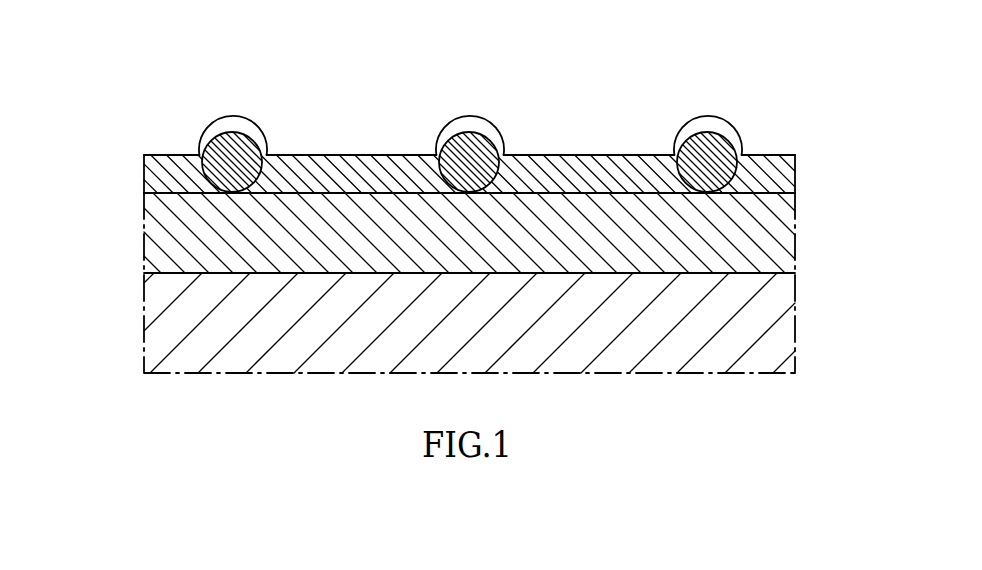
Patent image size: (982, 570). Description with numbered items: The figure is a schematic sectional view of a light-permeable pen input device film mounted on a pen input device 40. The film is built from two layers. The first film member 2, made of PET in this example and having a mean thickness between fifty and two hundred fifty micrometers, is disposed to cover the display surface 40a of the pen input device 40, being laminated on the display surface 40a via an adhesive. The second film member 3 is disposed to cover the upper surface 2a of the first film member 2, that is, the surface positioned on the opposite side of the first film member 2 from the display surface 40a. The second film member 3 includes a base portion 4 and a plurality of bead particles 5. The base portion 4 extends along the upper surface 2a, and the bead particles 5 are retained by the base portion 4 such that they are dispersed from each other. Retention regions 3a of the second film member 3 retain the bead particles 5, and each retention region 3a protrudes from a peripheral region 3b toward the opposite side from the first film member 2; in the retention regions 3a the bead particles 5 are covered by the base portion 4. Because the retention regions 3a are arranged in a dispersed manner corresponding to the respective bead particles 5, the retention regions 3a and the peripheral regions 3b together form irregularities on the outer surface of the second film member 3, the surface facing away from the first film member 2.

The first film member 2 is at (807, 247).
The upper surface 2a is at (164, 192).
The second film member 3 is at (807, 174).
The retention region 3a is at (690, 130).
The peripheral region 3b is at (650, 156).
The base portion 4 is at (768, 156).
The bead particles 5 is at (709, 129).
The pen input device 40 is at (807, 326).
The display surface 40a is at (187, 274).